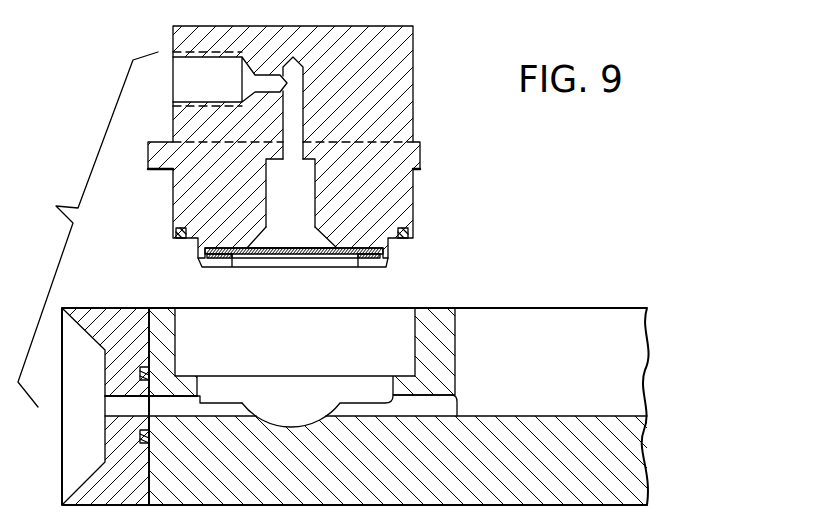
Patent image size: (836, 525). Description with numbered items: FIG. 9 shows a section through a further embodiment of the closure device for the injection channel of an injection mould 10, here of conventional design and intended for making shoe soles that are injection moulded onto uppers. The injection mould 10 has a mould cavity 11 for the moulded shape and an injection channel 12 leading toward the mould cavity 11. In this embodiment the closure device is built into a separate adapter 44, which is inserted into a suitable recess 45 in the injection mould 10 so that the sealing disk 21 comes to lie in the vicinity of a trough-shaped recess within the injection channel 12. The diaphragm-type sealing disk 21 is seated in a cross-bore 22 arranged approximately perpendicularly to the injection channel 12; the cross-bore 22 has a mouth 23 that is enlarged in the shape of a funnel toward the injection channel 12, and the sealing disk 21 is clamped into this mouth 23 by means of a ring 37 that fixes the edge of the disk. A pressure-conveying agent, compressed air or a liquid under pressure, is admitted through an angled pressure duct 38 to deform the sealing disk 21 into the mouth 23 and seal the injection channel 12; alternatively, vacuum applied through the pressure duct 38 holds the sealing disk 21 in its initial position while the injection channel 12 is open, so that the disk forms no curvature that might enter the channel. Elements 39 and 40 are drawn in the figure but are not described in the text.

The injection mould 10 is at (543, 267).
The mould cavity 11 is at (513, 323).
The injection channel 12 is at (173, 408).
The sealing disk 21 is at (295, 247).
The cross-bore 22 is at (293, 192).
The mouth 23 is at (257, 232).
The ring 37 is at (222, 258).
The pressure duct 38 is at (283, 68).
The end wall 39 is at (130, 497).
The slot passage 40 is at (115, 405).
The adapter 44 is at (447, 75).
The recess 45 is at (332, 323).